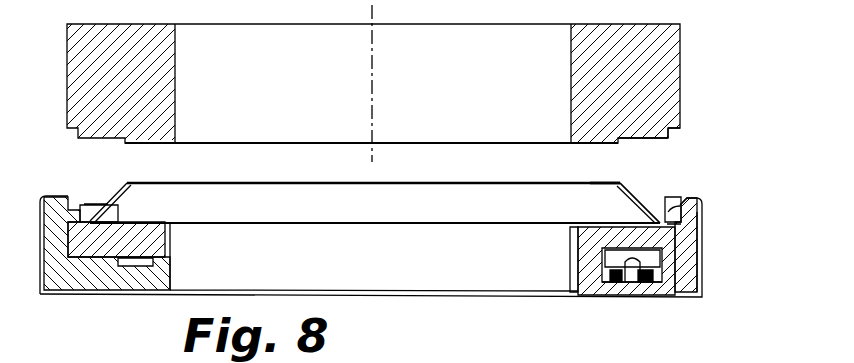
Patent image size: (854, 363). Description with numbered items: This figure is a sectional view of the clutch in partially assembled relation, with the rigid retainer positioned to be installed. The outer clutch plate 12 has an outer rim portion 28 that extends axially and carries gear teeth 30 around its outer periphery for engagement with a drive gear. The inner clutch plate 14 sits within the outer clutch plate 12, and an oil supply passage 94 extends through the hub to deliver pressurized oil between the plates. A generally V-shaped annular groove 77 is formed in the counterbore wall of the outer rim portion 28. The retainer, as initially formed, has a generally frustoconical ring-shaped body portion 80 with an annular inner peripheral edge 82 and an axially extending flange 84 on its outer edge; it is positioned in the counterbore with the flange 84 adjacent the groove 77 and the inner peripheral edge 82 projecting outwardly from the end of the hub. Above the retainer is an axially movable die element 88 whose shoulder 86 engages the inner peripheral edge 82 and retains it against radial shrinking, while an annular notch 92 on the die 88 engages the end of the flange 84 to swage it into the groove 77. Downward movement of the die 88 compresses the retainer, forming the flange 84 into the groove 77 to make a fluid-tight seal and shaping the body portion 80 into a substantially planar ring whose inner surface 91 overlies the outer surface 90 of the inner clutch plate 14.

The axially movable die element 88 is at (668, 78).
The annular notch 92 is at (672, 133).
The shoulder 86 is at (682, 137).
The annular inner peripheral edge 82 is at (623, 142).
The frustoconical ring-shaped body portion 80 is at (613, 180).
The axially extending flange 84 is at (680, 206).
The V-shaped annular groove 77 is at (670, 212).
The outer rim portion 28 is at (687, 235).
The gear teeth 30 is at (700, 259).
The outer clutch plate 12 is at (417, 270).
The oil supply passage 94 is at (600, 262).
The outer surface 90 is at (603, 222).
The inner surface 91 is at (620, 202).
The inner clutch plate 14 is at (442, 185).